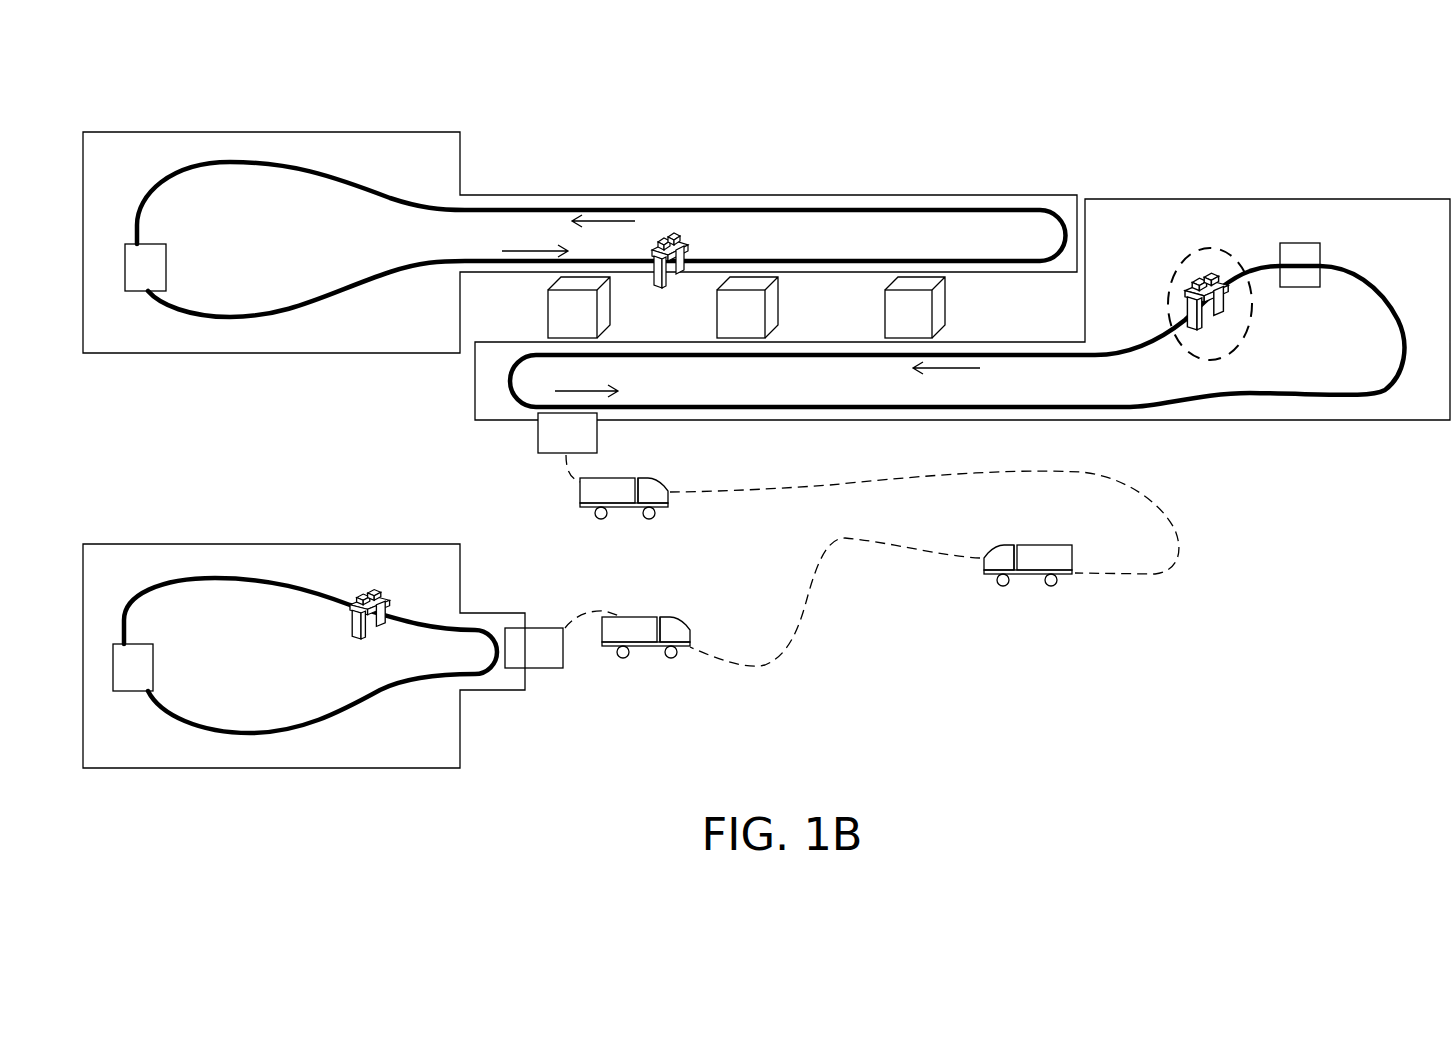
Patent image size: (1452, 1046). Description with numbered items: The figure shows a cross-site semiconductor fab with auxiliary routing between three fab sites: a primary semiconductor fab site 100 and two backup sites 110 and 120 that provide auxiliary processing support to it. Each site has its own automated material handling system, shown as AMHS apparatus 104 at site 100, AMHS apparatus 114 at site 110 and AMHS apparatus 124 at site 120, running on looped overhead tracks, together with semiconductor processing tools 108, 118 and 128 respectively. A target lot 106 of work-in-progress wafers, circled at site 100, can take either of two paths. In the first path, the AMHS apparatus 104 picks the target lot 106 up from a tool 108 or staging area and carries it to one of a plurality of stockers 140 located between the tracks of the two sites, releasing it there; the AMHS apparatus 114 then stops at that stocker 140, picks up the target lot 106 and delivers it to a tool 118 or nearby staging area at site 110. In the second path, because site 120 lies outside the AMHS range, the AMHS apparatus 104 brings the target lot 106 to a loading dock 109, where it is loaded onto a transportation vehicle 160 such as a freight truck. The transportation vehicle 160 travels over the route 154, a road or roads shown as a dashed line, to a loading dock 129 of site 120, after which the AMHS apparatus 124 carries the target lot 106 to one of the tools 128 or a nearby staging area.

The semiconductor fab site 100 is at (1268, 198).
The AMHS apparatus 104 is at (1207, 270).
The target lot 106 is at (1244, 330).
The semiconductor processing tool 108 is at (1322, 251).
The loading dock 109 is at (530, 440).
The semiconductor fab site 110 is at (270, 131).
The AMHS apparatus 114 is at (690, 243).
The semiconductor processing tool 118 is at (166, 267).
The semiconductor fab site 120 is at (270, 543).
The AMHS apparatus 124 is at (350, 630).
The semiconductor processing tool 128 is at (154, 665).
The loading dock 129 is at (548, 670).
The stocker 140 is at (600, 313).
The route 154 is at (800, 618).
The transportation vehicle 160 is at (627, 512).